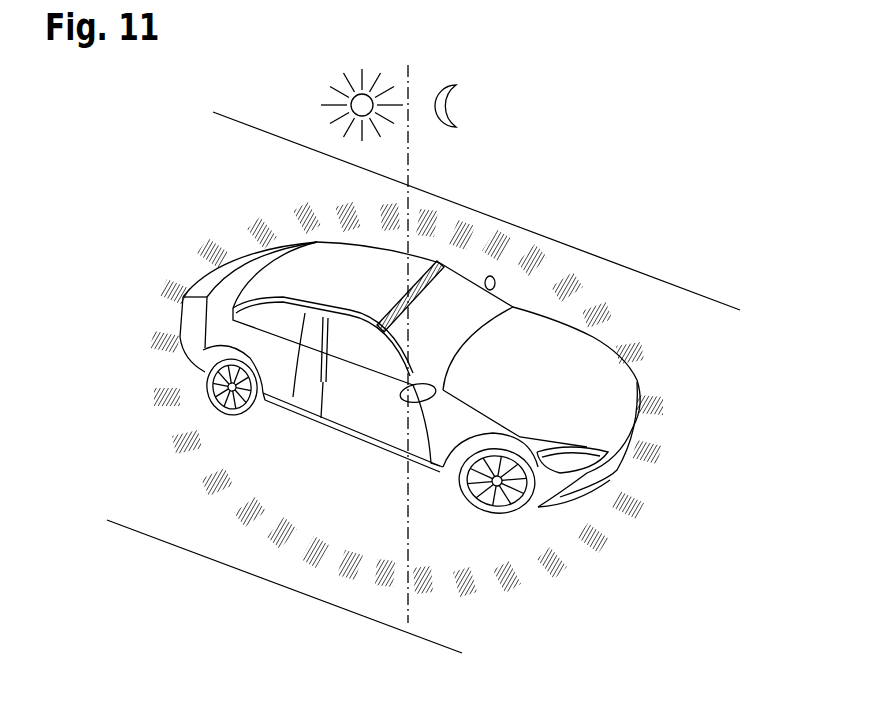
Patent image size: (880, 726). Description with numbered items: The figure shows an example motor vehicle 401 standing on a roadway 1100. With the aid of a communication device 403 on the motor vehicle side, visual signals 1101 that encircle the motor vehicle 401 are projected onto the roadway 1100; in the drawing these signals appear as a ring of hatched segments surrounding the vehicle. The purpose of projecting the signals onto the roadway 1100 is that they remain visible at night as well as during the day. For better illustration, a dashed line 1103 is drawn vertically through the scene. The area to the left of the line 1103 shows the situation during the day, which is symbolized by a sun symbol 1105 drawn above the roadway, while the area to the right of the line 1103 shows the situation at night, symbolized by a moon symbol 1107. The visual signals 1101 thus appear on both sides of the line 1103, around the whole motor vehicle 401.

The roadway 1100 is at (203, 165).
The visual signals 1101 is at (207, 489).
The dashed line 1103 is at (410, 158).
The sun symbol 1105 is at (320, 100).
The moon symbol 1107 is at (450, 111).
The motor vehicle 401 is at (612, 382).
The communication device 403 is at (293, 397).